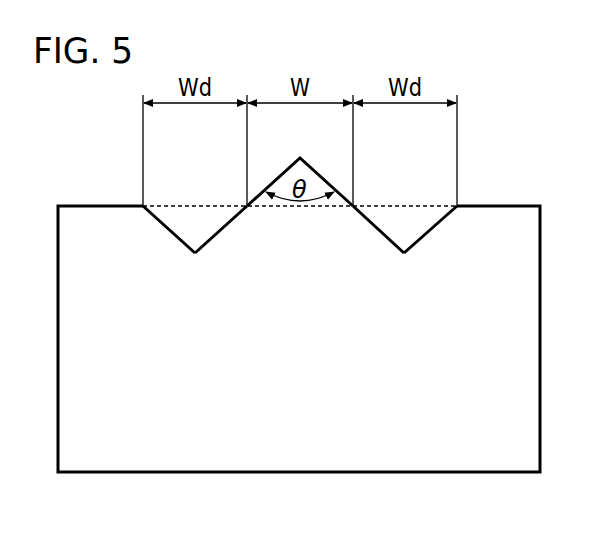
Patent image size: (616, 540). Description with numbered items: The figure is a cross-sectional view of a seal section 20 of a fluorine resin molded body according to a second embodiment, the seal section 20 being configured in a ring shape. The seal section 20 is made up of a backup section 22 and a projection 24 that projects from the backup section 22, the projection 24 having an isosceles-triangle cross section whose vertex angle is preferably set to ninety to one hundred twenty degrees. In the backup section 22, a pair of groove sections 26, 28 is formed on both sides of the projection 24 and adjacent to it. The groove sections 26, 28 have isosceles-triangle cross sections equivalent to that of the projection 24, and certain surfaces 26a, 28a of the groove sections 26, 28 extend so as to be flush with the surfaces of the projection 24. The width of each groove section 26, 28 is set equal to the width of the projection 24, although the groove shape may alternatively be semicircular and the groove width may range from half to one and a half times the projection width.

The seal section 20 is at (578, 87).
The backup section 22 is at (480, 455).
The projection 24 is at (307, 172).
The groove section 26 is at (195, 229).
The surface of groove section 26a is at (220, 228).
The groove section 28 is at (405, 229).
The surface of groove section 28a is at (378, 228).